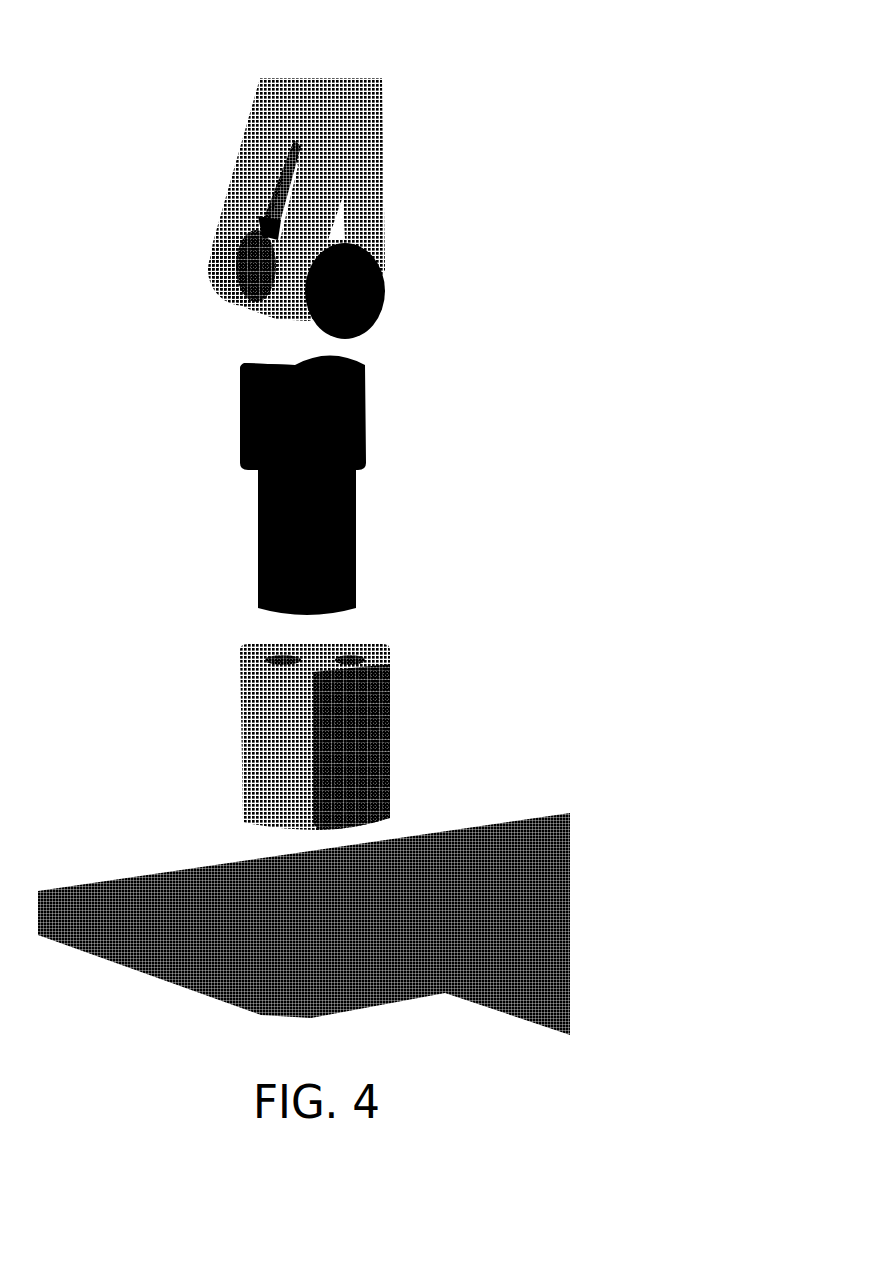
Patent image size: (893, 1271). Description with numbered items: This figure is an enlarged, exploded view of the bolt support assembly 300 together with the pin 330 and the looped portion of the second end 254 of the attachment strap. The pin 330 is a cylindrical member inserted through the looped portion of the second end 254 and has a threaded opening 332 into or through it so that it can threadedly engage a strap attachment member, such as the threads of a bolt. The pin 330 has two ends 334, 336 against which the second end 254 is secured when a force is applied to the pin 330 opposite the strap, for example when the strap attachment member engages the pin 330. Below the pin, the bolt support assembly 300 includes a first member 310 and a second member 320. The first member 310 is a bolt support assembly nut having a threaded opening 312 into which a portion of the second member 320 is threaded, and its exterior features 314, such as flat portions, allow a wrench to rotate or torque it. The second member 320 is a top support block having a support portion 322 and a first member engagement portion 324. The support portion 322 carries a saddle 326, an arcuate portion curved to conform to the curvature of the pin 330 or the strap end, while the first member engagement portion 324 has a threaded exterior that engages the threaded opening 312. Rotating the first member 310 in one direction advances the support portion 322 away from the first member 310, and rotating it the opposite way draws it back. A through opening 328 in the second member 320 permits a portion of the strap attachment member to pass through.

The second end 254 is at (210, 155).
The bolt support assembly 300 is at (476, 456).
The first member 310 is at (307, 704).
The threaded opening 312 is at (330, 648).
The exterior features 314 is at (363, 727).
The second member 320 is at (304, 465).
The support portion 322 is at (357, 402).
The first member engagement portion 324 is at (347, 517).
The saddle 326 is at (333, 360).
The through opening 328 is at (286, 356).
The pin 330 is at (240, 250).
The threaded opening 332 is at (260, 218).
The end 334 is at (376, 284).
The end 336 is at (200, 265).